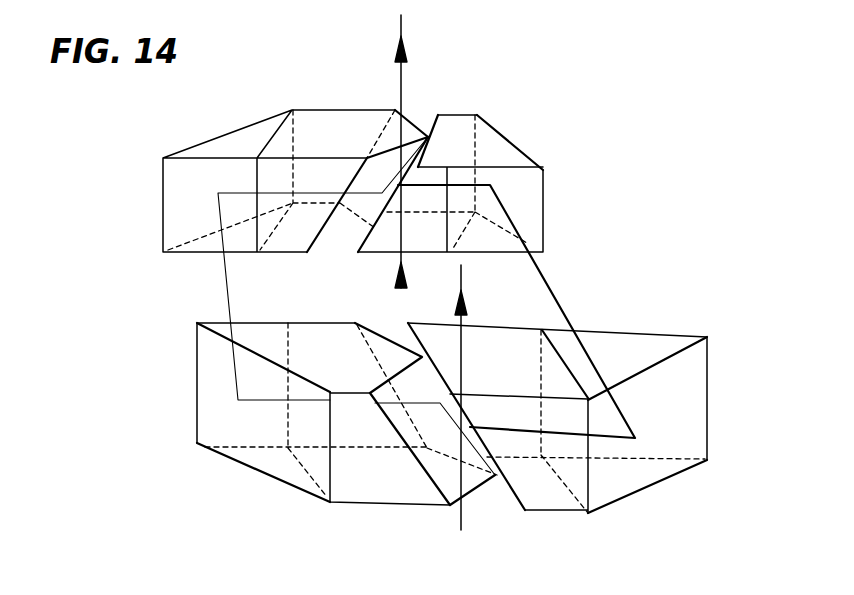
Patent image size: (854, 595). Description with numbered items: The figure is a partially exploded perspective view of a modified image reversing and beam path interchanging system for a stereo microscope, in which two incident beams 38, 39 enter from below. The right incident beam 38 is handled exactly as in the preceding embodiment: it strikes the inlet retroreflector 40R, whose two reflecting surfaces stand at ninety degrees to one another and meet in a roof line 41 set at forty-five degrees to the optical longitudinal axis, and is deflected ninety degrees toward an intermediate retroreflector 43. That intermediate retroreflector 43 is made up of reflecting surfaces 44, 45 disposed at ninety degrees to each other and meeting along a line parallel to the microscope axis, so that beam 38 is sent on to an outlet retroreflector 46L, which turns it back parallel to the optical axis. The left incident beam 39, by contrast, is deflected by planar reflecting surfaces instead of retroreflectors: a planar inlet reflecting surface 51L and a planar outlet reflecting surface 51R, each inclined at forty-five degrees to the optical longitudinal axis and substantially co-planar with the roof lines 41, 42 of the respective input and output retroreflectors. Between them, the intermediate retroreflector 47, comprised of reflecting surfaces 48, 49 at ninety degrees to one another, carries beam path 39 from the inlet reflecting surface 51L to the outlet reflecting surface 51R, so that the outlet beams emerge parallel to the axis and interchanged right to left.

The right incident beam 38 is at (463, 512).
The left incident beam 39 is at (400, 257).
The inlet retroreflector 40R is at (354, 350).
The roof line 41 is at (440, 382).
The roof line 42 is at (427, 153).
The intermediate retroreflector 43 is at (163, 220).
The reflecting surface 44 is at (227, 400).
The reflecting surface 45 is at (237, 138).
The outlet retroreflector 46L is at (366, 124).
The intermediate retroreflector 47 is at (547, 224).
The reflecting surface 48 is at (505, 152).
The reflecting surface 49 is at (673, 397).
The planar inlet reflecting surface 51L is at (432, 156).
The planar outlet reflecting surface 51R is at (424, 362).